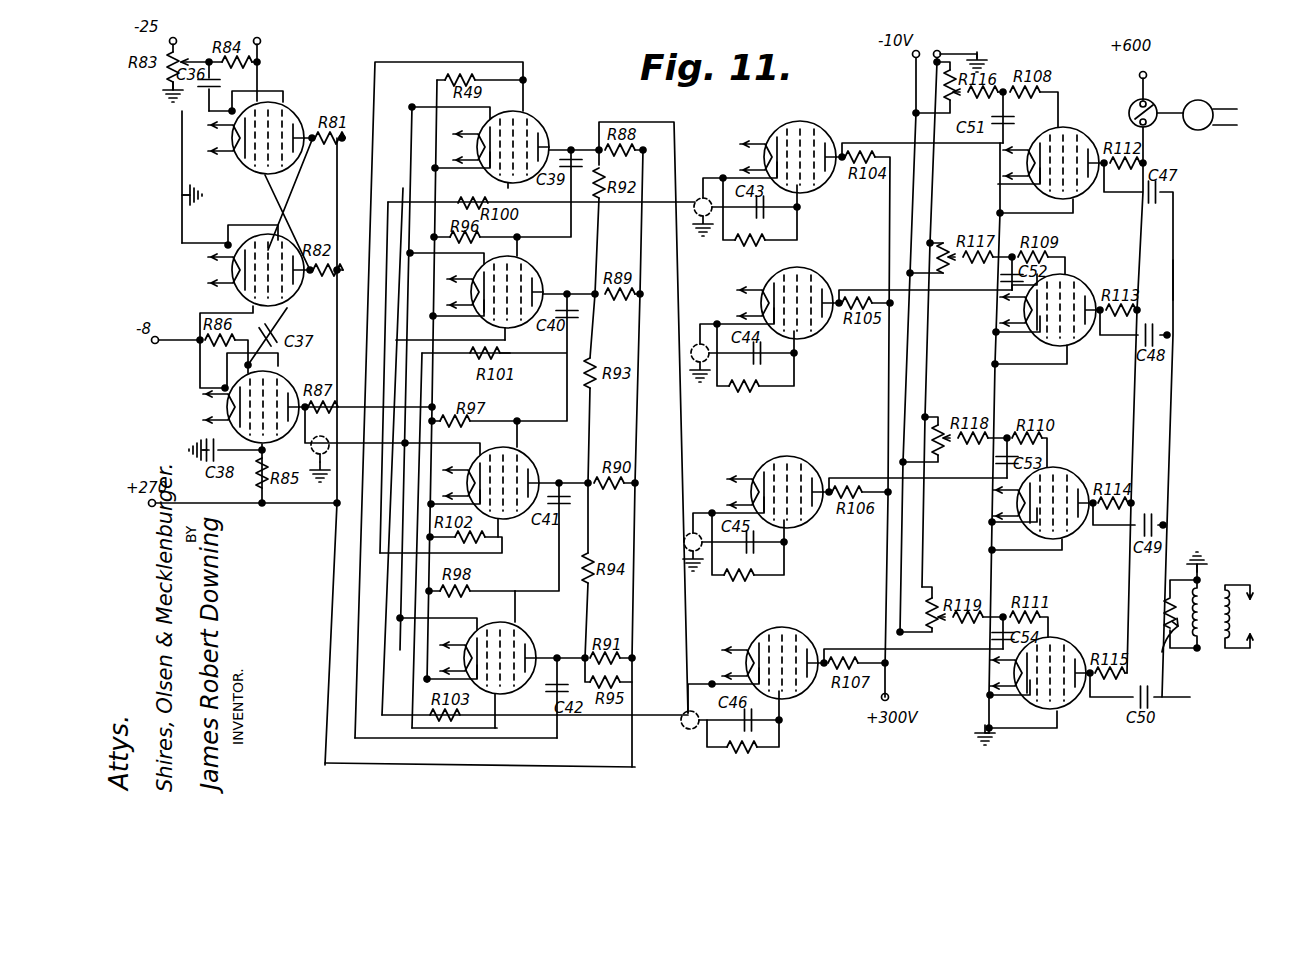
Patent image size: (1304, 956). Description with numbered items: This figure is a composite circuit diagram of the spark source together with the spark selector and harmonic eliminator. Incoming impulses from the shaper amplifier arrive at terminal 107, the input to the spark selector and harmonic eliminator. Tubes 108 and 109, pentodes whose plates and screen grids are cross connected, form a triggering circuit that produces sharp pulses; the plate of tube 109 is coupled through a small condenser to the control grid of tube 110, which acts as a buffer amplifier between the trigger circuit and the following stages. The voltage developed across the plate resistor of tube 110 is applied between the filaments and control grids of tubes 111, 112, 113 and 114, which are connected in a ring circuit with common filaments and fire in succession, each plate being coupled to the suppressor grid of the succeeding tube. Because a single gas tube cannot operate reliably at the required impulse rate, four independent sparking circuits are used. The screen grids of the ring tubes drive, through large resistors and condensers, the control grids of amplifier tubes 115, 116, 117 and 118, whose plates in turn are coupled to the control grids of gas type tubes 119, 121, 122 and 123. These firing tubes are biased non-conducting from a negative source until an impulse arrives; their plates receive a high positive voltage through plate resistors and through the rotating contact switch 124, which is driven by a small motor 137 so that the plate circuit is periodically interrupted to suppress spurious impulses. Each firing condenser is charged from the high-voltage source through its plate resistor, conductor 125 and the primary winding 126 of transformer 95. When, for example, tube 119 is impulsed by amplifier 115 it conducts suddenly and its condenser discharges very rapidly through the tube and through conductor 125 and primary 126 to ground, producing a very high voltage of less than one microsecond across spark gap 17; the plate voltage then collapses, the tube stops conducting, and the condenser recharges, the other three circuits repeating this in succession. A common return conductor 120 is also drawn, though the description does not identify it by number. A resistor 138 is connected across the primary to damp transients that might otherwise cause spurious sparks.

The terminal 107 is at (263, 41).
The tube 108 is at (296, 109).
The tube 109 is at (288, 306).
The tube 110 is at (285, 388).
The tube 111 is at (540, 131).
The tube 112 is at (534, 281).
The tube 113 is at (532, 471).
The tube 114 is at (529, 646).
The tube 115 is at (822, 131).
The tube 116 is at (814, 275).
The tube 117 is at (802, 461).
The tube 118 is at (800, 633).
The gas type tube 119 is at (1072, 134).
The ground bus conductor 120 is at (1000, 197).
The gas type tube 121 is at (1075, 282).
The gas type tube 122 is at (1072, 476).
The gas type tube 123 is at (1064, 647).
The rotating contact switch 124 is at (1148, 99).
The conductor 125 is at (1173, 260).
The primary winding 126 is at (1204, 589).
The motor 137 is at (1204, 97).
The resistor 138 is at (1178, 648).
The transformer 95 is at (1226, 628).
The spark gap 17 is at (1252, 614).